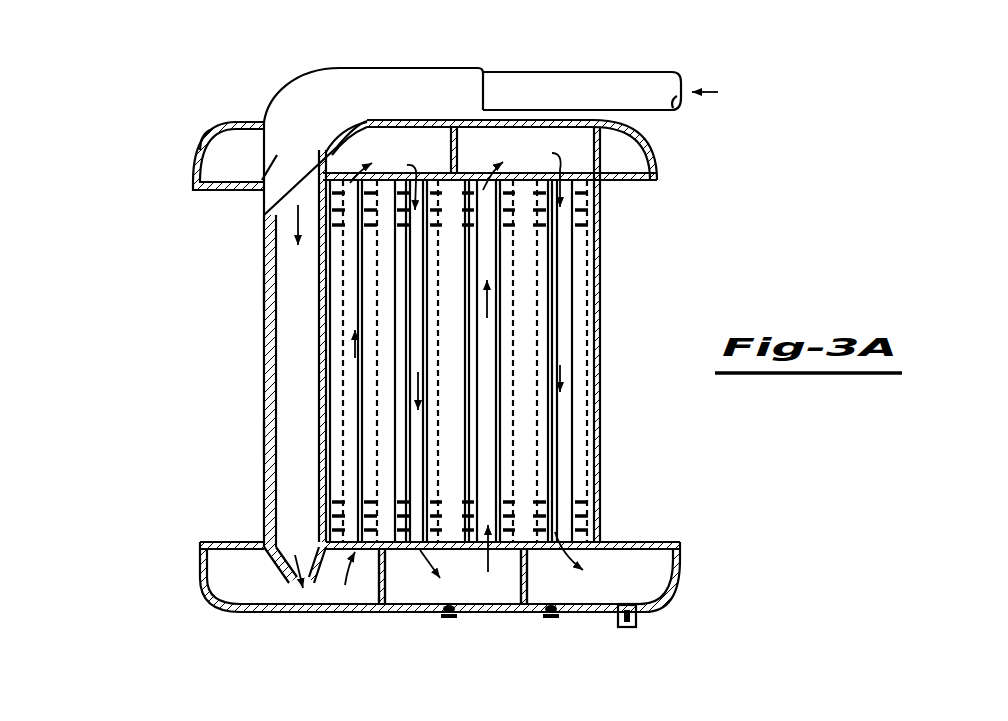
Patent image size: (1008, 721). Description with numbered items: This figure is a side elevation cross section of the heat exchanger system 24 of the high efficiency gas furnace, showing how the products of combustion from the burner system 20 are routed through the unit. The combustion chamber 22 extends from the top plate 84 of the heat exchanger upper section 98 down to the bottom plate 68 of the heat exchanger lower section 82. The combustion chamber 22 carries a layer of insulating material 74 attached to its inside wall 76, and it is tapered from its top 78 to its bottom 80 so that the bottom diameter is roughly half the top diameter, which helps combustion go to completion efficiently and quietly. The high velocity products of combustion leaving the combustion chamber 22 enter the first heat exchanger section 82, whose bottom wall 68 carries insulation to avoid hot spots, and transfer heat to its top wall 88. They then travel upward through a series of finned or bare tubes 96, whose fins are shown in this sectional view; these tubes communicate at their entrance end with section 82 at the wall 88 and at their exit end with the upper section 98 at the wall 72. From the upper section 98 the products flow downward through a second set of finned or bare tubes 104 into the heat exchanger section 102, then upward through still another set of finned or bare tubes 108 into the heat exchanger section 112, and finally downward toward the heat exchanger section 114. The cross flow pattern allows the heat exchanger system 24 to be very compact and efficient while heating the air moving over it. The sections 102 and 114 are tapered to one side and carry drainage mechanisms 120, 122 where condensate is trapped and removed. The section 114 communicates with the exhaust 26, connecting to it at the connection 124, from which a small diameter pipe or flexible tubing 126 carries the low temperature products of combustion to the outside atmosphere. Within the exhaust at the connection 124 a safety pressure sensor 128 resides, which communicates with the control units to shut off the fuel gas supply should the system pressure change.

The burner system 20 is at (323, 120).
The combustion chamber 22 is at (303, 395).
The heat exchanger system 24 is at (650, 132).
The exhaust 26 is at (635, 628).
The bottom plate 68 is at (253, 615).
The wall 72 is at (258, 190).
The insulating material 74 is at (263, 438).
The inside wall 76 is at (263, 288).
The top 78 is at (252, 186).
The bottom 80 is at (282, 562).
The first heat exchanger section 82 is at (198, 576).
The top plate 84 is at (237, 122).
The top wall 88 is at (249, 542).
The finned or bare tubes/pipes 96 is at (350, 333).
The heat exchanger upper section 98 is at (198, 150).
The heat exchanger section 102 is at (385, 585).
The second set of finned or bare tubes/pipes 104 is at (428, 258).
The finned or bare tubes/pipes 108 is at (500, 263).
The heat exchanger section 112 is at (563, 133).
The heat exchanger section 114 is at (655, 568).
The drainage mechanism 120 is at (450, 612).
The drainage mechanism 122 is at (553, 612).
The connection 124 is at (612, 625).
The exhaust pipe or tubing 126 is at (635, 630).
The safety pressure sensor 128 is at (637, 607).